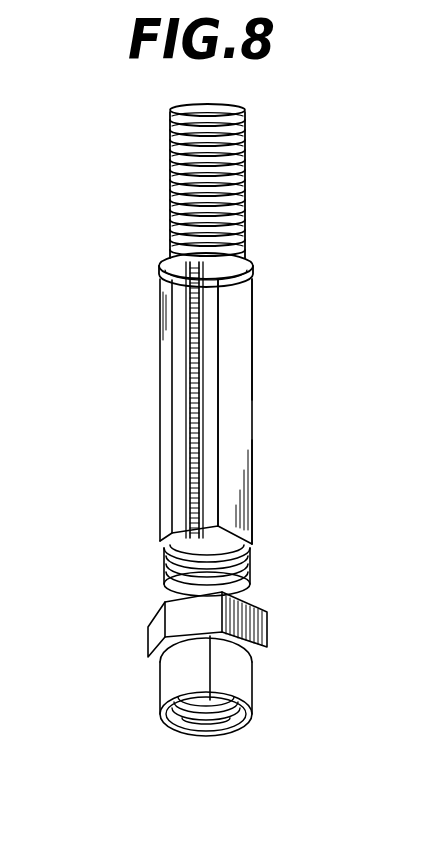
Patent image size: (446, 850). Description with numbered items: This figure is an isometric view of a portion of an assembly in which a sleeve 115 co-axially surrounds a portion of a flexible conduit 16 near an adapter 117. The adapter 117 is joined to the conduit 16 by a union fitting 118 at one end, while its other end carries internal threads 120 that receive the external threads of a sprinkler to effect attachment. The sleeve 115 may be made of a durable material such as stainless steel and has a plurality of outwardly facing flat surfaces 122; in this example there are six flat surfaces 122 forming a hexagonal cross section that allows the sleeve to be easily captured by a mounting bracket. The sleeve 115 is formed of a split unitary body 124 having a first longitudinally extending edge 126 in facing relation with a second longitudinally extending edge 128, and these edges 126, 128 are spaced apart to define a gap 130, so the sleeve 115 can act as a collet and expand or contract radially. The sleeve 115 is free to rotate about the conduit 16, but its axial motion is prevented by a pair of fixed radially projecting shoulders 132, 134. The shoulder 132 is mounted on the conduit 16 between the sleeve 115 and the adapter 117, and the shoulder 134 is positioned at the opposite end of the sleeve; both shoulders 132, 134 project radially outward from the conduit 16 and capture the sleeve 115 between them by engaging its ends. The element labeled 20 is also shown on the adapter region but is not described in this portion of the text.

The flexible conduit 16 is at (246, 152).
The shoulder 134 is at (158, 276).
The split unitary body 124 is at (252, 336).
The sleeve 115 is at (252, 372).
The second longitudinally extending edge 128 is at (192, 380).
The gap 130 is at (190, 430).
The first longitudinally extending edge 126 is at (243, 412).
The flat surfaces 122 is at (252, 490).
The shoulder 132 is at (167, 563).
The coupling 20 is at (262, 585).
The union fitting 118 is at (147, 657).
The adapter 117 is at (252, 698).
The internal threads 120 is at (219, 703).